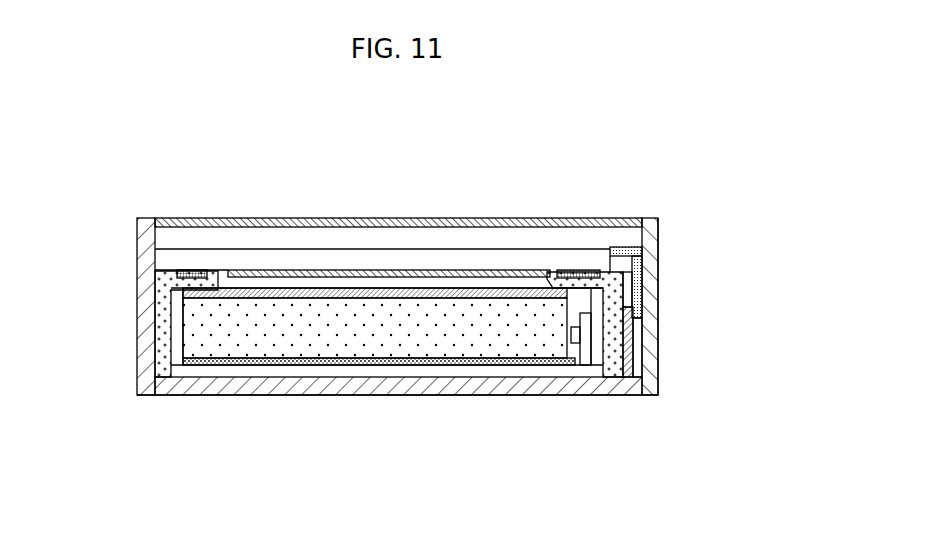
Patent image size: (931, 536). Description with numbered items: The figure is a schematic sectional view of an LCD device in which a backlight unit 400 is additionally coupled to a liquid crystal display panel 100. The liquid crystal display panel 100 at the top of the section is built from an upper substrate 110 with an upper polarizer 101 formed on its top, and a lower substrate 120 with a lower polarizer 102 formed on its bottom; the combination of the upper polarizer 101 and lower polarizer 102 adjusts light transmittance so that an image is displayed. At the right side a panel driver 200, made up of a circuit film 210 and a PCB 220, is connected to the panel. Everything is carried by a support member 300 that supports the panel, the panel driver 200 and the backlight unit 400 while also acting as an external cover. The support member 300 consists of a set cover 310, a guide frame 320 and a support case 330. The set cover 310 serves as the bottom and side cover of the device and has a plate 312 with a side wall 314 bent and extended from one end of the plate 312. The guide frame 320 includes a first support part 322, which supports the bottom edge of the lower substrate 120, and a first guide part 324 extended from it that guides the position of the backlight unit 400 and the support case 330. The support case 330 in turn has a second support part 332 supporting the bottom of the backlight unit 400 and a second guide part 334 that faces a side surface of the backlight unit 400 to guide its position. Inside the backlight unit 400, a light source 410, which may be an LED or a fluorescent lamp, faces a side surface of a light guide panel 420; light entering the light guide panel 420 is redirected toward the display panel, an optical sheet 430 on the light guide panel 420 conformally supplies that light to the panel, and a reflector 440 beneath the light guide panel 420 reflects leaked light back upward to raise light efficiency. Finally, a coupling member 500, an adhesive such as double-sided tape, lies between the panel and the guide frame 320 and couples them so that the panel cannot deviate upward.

The liquid crystal display panel 100 is at (340, 250).
The upper polarizer 101 is at (168, 222).
The upper substrate 110 is at (167, 243).
The lower substrate 120 is at (167, 253).
The lower polarizer 102 is at (240, 273).
The panel driver 200 is at (445, 306).
The circuit film 210 is at (645, 281).
The PCB 220 is at (669, 347).
The support member 300 is at (436, 358).
The set cover 310 is at (436, 342).
The plate 312 is at (655, 394).
The side wall 314 is at (660, 372).
The guide frame 320 is at (407, 368).
The first support part 322 is at (583, 288).
The first guide part 324 is at (626, 340).
The support case 330 is at (387, 377).
The second support part 332 is at (565, 376).
The second guide part 334 is at (597, 355).
The backlight unit 400 is at (381, 377).
The light source 410 is at (572, 337).
The light guide panel 420 is at (310, 345).
The optical sheet 430 is at (273, 292).
The reflector 440 is at (345, 362).
The coupling member 500 is at (205, 278).